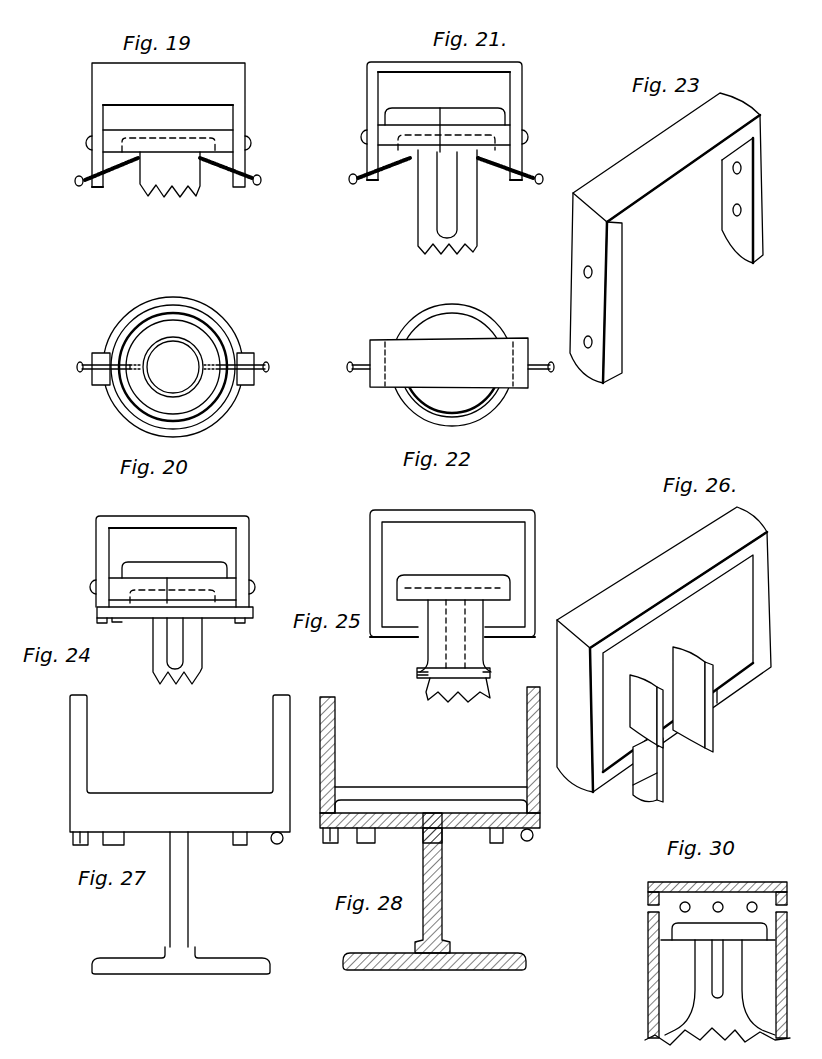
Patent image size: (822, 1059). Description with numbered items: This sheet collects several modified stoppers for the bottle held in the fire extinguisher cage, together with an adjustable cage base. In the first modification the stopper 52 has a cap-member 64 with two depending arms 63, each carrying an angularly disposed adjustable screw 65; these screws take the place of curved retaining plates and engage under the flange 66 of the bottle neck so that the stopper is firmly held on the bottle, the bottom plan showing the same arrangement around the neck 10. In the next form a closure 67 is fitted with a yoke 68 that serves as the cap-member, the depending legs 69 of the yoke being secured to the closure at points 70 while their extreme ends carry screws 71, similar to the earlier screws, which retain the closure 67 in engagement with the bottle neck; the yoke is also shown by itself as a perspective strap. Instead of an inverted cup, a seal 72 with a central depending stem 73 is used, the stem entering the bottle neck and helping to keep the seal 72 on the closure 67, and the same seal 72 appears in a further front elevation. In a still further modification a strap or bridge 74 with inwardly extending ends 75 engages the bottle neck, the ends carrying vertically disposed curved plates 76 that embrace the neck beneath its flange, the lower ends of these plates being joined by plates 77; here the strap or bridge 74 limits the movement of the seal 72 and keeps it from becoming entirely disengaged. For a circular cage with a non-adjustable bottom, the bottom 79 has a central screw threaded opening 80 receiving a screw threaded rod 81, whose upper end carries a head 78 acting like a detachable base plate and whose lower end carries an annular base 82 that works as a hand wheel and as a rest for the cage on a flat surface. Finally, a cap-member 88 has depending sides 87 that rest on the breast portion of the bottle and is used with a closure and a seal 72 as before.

In FIG. 20, the pipe 10 is at (200, 340).
In FIG. 24, the stopper 52 is at (180, 569).
In FIG. 19, the depending arms 63 is at (97, 188).
In FIG. 20, the depending arms 63 is at (247, 353).
In FIG. 19, the cap-member 64 is at (237, 97).
In FIG. 20, the cap-member 64 is at (195, 305).
In FIG. 19, the adjustable screws 65 is at (121, 165).
In FIG. 20, the adjustable screws 65 is at (259, 366).
In FIG. 19, the flange 66 is at (162, 140).
In FIG. 21, the closure 67 is at (388, 138).
In FIG. 22, the closure 67 is at (460, 305).
In FIG. 21, the yoke 68 is at (515, 95).
In FIG. 22, the yoke 68 is at (482, 352).
In FIG. 23, the yoke 68 is at (641, 150).
In FIG. 21, the depending legs 69 is at (525, 147).
In FIG. 23, the depending legs 69 is at (755, 185).
In FIG. 21, the securing points 70 is at (362, 137).
In FIG. 21, the screws 71 is at (402, 172).
In FIG. 22, the screws 71 is at (540, 362).
In FIG. 21, the seal 72 is at (428, 118).
In FIG. 22, the seal 72 is at (468, 323).
In FIG. 24, the seal 72 is at (164, 571).
In FIG. 25, the seal 72 is at (434, 578).
In FIG. 30, the seal 72 is at (718, 931).
In FIG. 21, the central depending stem 73 is at (455, 218).
In FIG. 24, the central depending stem 73 is at (182, 645).
In FIG. 25, the strap or bridge 74 is at (533, 557).
In FIG. 26, the strap or bridge 74 is at (790, 568).
In FIG. 25, the inwardly extending ends 75 is at (400, 640).
In FIG. 26, the inwardly extending ends 75 is at (744, 680).
In FIG. 25, the curved plates 76 is at (480, 615).
In FIG. 26, the curved plates 76 is at (638, 675).
In FIG. 24, the plates 77 is at (142, 612).
In FIG. 25, the plates 77 is at (432, 700).
In FIG. 30, the plates 77 is at (717, 992).
In FIG. 28, the head 78 is at (446, 802).
In FIG. 27, the bottom 79 is at (238, 830).
In FIG. 28, the bottom 79 is at (390, 829).
In FIG. 28, the screw threaded opening 80 is at (444, 832).
In FIG. 27, the screw threaded rod 81 is at (180, 889).
In FIG. 28, the screw threaded rod 81 is at (438, 912).
In FIG. 27, the annular base 82 is at (207, 963).
In FIG. 28, the annular base 82 is at (362, 969).
In FIG. 30, the depending sides 87 is at (648, 960).
In FIG. 30, the cap-member 88 is at (717, 877).